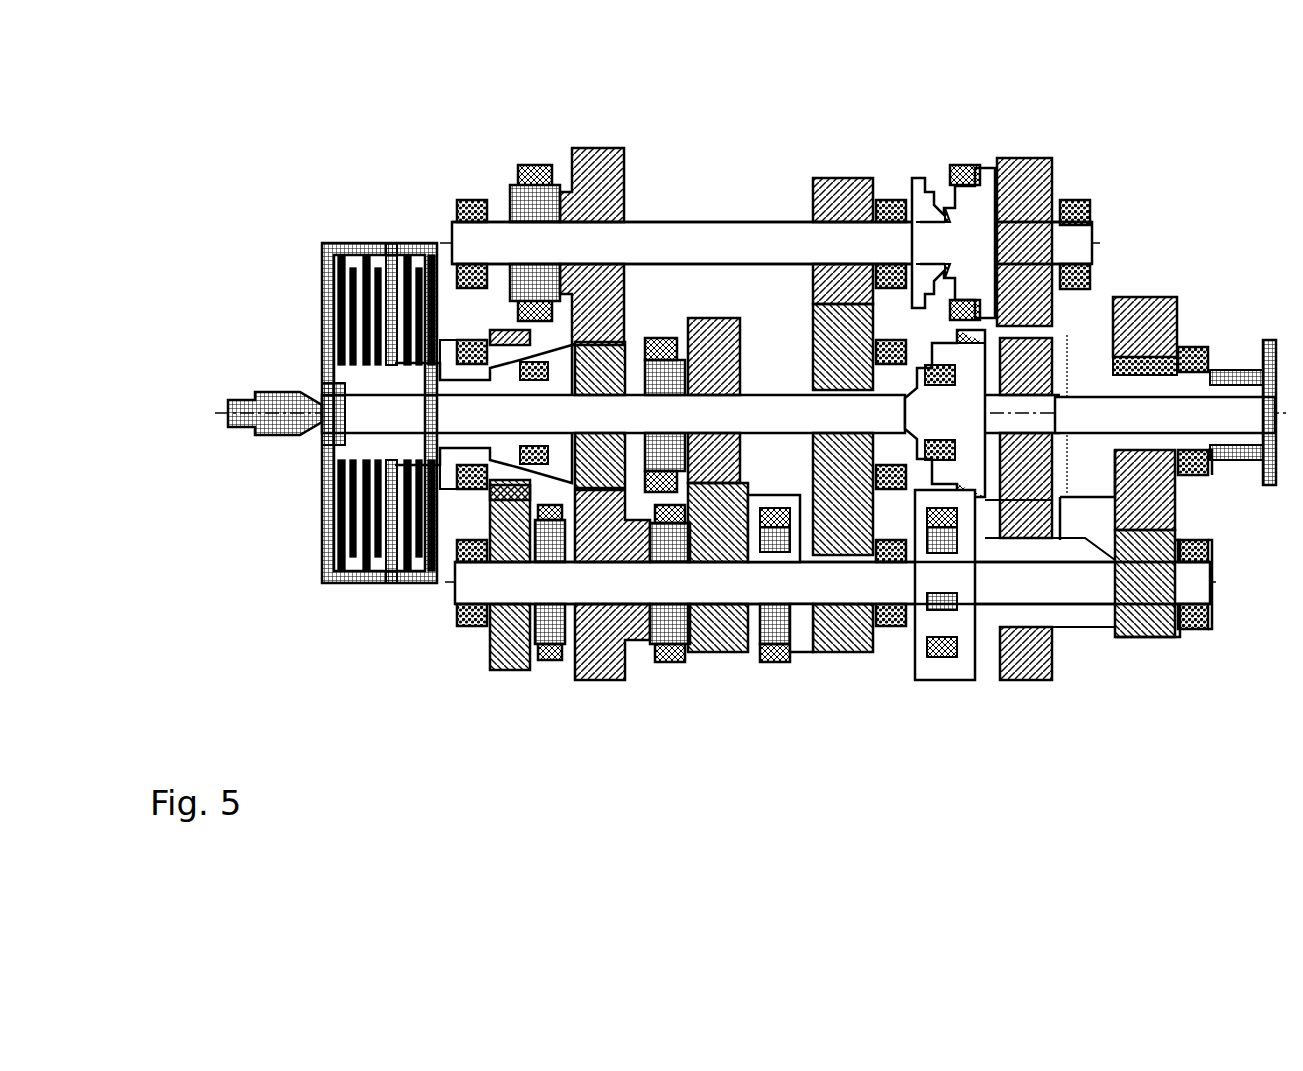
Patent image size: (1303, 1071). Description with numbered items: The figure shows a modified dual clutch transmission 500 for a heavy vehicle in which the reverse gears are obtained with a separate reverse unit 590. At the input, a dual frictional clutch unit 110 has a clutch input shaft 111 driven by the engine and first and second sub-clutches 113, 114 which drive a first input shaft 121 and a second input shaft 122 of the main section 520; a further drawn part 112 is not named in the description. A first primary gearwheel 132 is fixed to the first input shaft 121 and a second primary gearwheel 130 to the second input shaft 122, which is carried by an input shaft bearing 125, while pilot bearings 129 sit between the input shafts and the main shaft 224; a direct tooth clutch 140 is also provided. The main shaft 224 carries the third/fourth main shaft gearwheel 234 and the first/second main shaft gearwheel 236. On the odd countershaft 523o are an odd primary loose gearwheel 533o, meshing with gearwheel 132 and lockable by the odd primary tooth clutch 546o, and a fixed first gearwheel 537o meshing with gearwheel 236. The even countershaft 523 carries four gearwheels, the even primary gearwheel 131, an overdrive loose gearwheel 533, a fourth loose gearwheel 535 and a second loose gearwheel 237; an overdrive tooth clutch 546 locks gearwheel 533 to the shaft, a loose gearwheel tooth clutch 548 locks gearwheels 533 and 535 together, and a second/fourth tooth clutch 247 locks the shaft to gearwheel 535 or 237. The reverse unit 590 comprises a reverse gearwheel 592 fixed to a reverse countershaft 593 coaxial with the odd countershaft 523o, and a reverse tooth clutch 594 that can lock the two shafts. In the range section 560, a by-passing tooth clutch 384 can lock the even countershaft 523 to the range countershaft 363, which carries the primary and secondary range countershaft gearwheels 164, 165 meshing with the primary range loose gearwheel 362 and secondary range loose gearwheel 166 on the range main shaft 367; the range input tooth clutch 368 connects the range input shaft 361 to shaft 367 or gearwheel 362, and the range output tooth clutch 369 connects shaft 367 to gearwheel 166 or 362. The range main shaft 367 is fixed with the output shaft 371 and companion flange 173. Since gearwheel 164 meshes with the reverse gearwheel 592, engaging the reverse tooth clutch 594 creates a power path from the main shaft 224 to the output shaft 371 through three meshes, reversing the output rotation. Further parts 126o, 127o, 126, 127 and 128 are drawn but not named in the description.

The modified dual clutch transmission 500 is at (318, 97).
The dual frictional clutch unit 110 is at (190, 166).
The clutch input shaft 111 is at (262, 398).
The motor housing 112 is at (388, 243).
The first sub-clutch 113 is at (343, 370).
The second sub-clutch 114 is at (397, 363).
The main section 520 is at (418, 69).
The upper bearing 126o is at (464, 199).
The odd primary tooth clutch 546o is at (530, 164).
The odd primary loose gearwheel 533o is at (600, 147).
The modified odd countershaft 523o is at (681, 221).
The first gearwheel 537o is at (828, 177).
The upper right bearing 127o is at (901, 199).
The reverse unit 590 is at (1023, 70).
The reverse tooth clutch 594 is at (978, 165).
The reverse countershaft 593 is at (990, 206).
The reverse gearwheel 592 is at (1053, 158).
The output shaft 371 is at (1219, 398).
The companion flange 173 is at (1268, 338).
The first input shaft 121 is at (393, 427).
The second input shaft 122 is at (443, 456).
The input shaft bearing 125 is at (468, 497).
The second primary gearwheel 130 is at (471, 608).
The pilot bearings 129 is at (509, 566).
The first primary gearwheel 132 is at (601, 622).
The direct tooth clutch 140 is at (665, 495).
The third/fourth main shaft gearwheel 234 is at (699, 658).
The main shaft 224 is at (818, 654).
The first/second main shaft gearwheel 236 is at (843, 630).
The bearing 128 is at (912, 630).
The bearing 126 is at (462, 628).
The modified even countershaft 523 is at (528, 592).
The even primary gearwheel 131 is at (498, 672).
The overdrive tooth clutch 546 is at (550, 662).
The overdrive loose gearwheel 533 is at (605, 684).
The loose gearwheel tooth clutch 548 is at (652, 664).
The fourth loose gearwheel 535 is at (708, 632).
The second/fourth tooth clutch 247 is at (757, 665).
The second loose gearwheel 237 is at (814, 622).
The bearing 127 is at (892, 630).
The by-passing tooth clutch 384 is at (948, 662).
The range section 560 is at (1278, 815).
The range output tooth clutch 369 is at (1088, 547).
The range main shaft 367 is at (1202, 478).
The range countershaft 363 is at (1035, 555).
The primary range loose gearwheel 362 is at (1150, 535).
The range input shaft 361 is at (1180, 482).
The range input tooth clutch 368 is at (1050, 682).
The primary range countershaft gearwheel 164 is at (1045, 600).
The secondary range countershaft gearwheel 165 is at (1182, 565).
The secondary range loose gearwheel 166 is at (1213, 478).